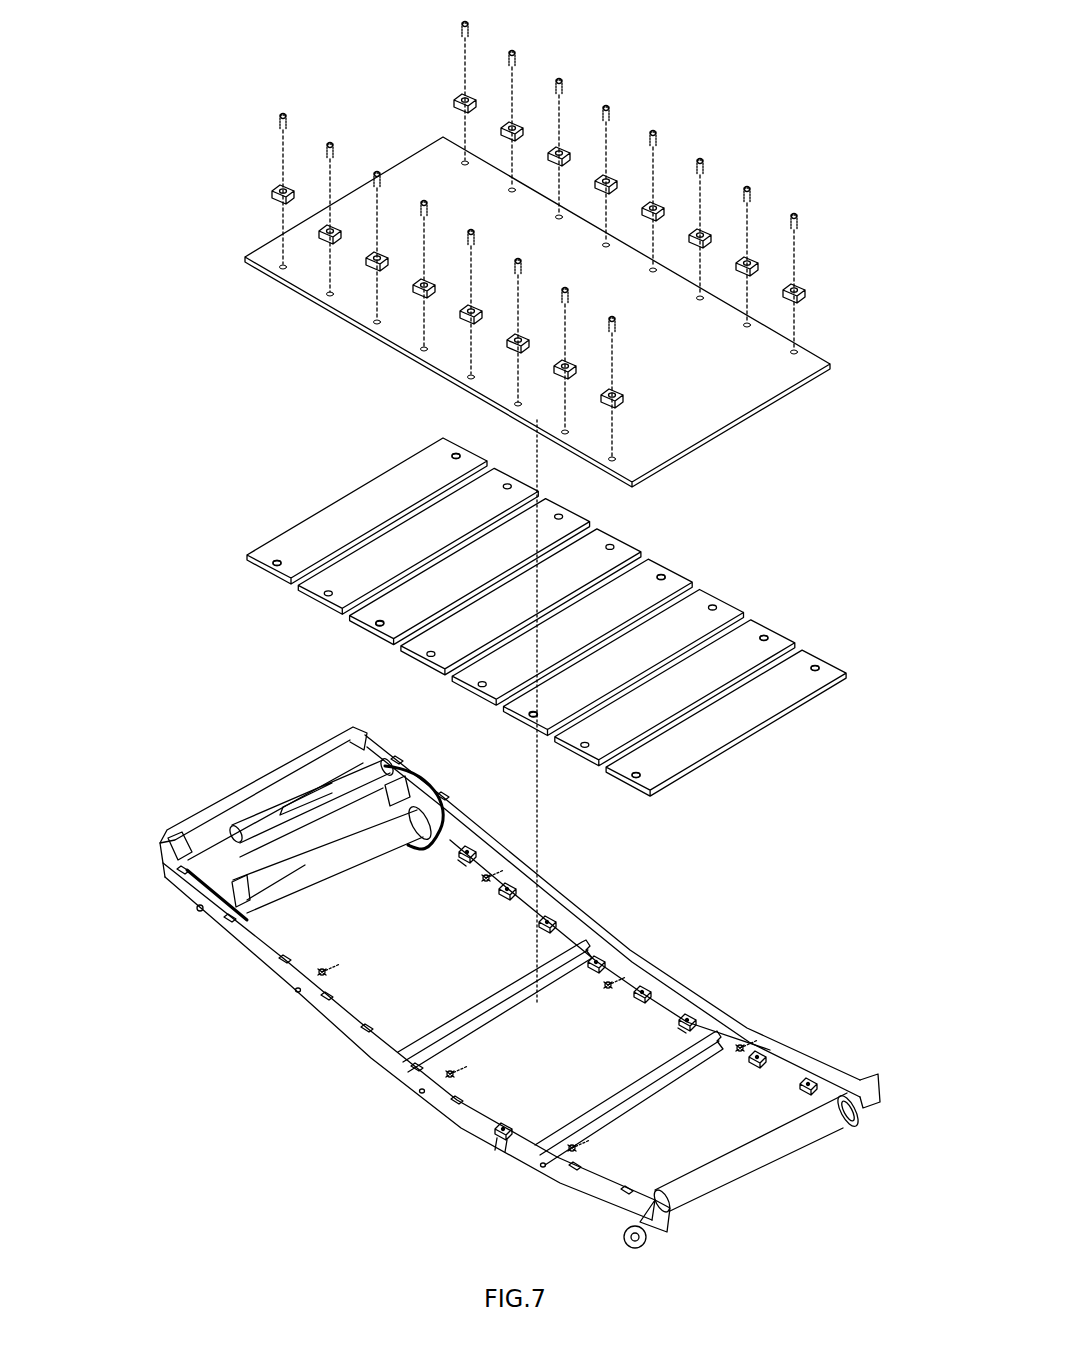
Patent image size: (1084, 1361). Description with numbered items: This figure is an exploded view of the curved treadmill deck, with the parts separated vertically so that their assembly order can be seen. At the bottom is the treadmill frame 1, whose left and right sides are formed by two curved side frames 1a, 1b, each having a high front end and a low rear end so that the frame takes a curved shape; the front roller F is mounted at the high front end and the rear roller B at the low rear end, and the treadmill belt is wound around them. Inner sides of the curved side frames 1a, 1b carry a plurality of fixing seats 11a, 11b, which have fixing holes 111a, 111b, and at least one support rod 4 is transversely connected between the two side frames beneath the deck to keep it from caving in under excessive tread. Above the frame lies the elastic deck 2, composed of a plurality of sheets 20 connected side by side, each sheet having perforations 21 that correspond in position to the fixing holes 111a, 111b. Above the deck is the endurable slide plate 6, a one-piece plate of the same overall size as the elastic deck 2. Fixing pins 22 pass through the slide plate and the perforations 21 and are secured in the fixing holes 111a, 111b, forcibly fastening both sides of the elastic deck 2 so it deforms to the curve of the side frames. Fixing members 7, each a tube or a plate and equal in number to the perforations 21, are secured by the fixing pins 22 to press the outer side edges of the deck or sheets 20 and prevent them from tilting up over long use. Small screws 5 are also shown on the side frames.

The treadmill frame 1 is at (503, 972).
The curved side frame 1a is at (216, 925).
The curved side frame 1b is at (749, 1028).
The elastic deck 2 is at (550, 598).
The support rod 4 is at (472, 1010).
The screw 5 is at (327, 972).
The endurable slide plate 6 is at (428, 165).
The fixing member 7 is at (462, 92).
The fixing seat 11a is at (285, 961).
The fixing seat 11b is at (470, 852).
The fixing hole 111a is at (510, 1125).
The fixing hole 111b is at (466, 860).
The sheet 20 is at (360, 500).
The perforation 21 is at (452, 451).
The fixing pin 22 is at (280, 120).
The front roller F is at (285, 888).
The rear roller B is at (757, 1152).